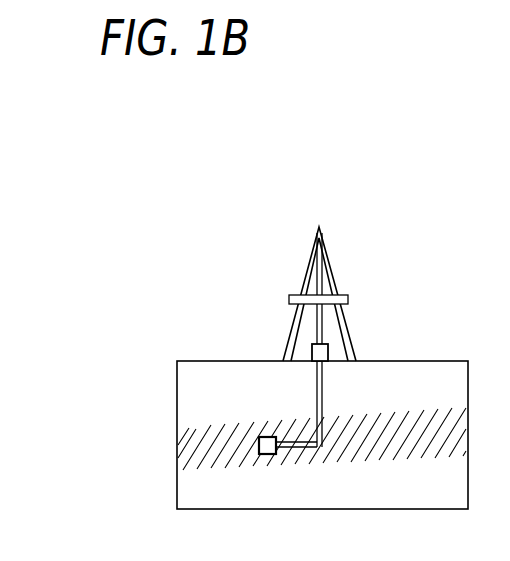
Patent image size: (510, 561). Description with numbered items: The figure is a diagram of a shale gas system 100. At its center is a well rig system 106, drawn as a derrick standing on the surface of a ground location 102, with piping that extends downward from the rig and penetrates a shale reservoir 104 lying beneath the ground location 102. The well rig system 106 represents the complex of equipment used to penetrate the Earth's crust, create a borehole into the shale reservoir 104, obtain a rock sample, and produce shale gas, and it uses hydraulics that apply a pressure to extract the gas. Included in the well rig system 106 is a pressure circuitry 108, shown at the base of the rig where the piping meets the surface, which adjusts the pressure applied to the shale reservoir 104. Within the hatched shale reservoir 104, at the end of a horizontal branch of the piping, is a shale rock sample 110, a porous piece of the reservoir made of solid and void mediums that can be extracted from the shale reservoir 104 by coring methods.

The shale gas system 100 is at (430, 110).
The ground location 102 is at (387, 361).
The shale reservoir 104 is at (177, 450).
The well rig system 106 is at (317, 247).
The pressure circuitry 108 is at (327, 346).
The shale rock sample 110 is at (260, 437).